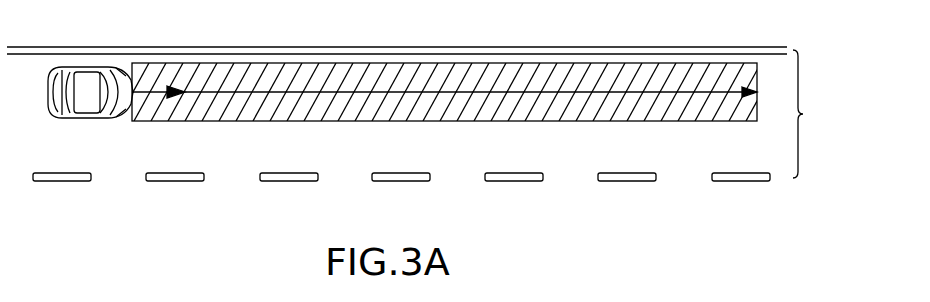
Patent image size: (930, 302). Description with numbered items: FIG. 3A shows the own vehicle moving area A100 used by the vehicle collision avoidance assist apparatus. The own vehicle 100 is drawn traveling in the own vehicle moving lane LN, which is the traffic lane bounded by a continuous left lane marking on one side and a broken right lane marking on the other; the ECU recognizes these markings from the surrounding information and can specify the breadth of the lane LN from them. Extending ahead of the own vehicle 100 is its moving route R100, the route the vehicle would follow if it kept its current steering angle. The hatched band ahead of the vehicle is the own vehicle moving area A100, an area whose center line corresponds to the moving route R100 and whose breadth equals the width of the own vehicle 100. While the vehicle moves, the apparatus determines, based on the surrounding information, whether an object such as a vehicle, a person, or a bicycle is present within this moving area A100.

The own vehicle 100 is at (90, 68).
The own vehicle moving area A100 is at (318, 113).
The moving route R100 is at (500, 95).
The own vehicle moving lane LN is at (815, 114).